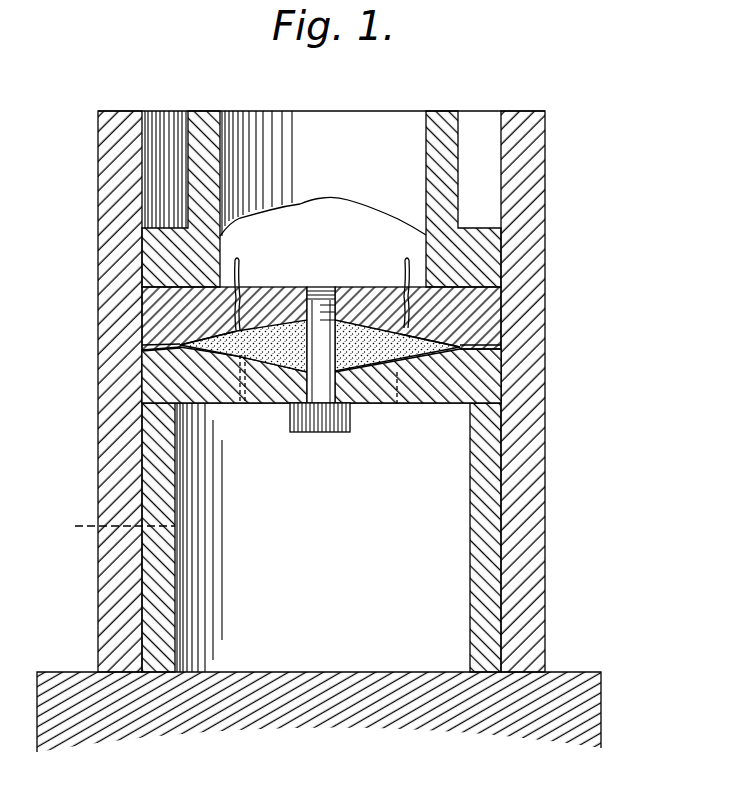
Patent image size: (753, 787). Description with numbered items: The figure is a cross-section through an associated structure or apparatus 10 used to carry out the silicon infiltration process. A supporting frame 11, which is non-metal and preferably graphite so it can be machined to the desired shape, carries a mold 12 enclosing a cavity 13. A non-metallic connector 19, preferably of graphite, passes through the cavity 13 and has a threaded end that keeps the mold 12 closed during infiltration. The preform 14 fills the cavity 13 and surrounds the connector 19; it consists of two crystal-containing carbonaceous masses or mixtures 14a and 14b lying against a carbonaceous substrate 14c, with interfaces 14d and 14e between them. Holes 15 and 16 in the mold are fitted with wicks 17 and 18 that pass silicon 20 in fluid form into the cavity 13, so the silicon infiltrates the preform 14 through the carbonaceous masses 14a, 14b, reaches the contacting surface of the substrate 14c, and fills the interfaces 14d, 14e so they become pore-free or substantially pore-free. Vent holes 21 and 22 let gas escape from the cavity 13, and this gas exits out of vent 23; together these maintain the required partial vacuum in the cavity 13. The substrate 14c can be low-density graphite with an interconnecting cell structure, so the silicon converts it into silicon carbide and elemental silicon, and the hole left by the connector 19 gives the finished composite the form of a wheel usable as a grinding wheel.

The apparatus 10 is at (545, 418).
The supporting frame 11 is at (546, 522).
The mold 12 is at (160, 385).
The cavity 13 is at (417, 352).
The preform 14 is at (263, 370).
The crystal-containing carbonaceous mass 14a is at (144, 358).
The crystal-containing carbonaceous mass 14b is at (463, 348).
The carbonaceous substrate 14c is at (360, 336).
The interface 14d is at (215, 338).
The interface 14e is at (427, 340).
The hole 15 is at (230, 303).
The hole 16 is at (418, 310).
The wick 17 is at (246, 274).
The wick 18 is at (404, 262).
The non-metallic connector 19 is at (313, 433).
The silicon 20 is at (357, 210).
The vent hole 21 is at (244, 403).
The vent hole 22 is at (397, 403).
The vent 23 is at (106, 532).